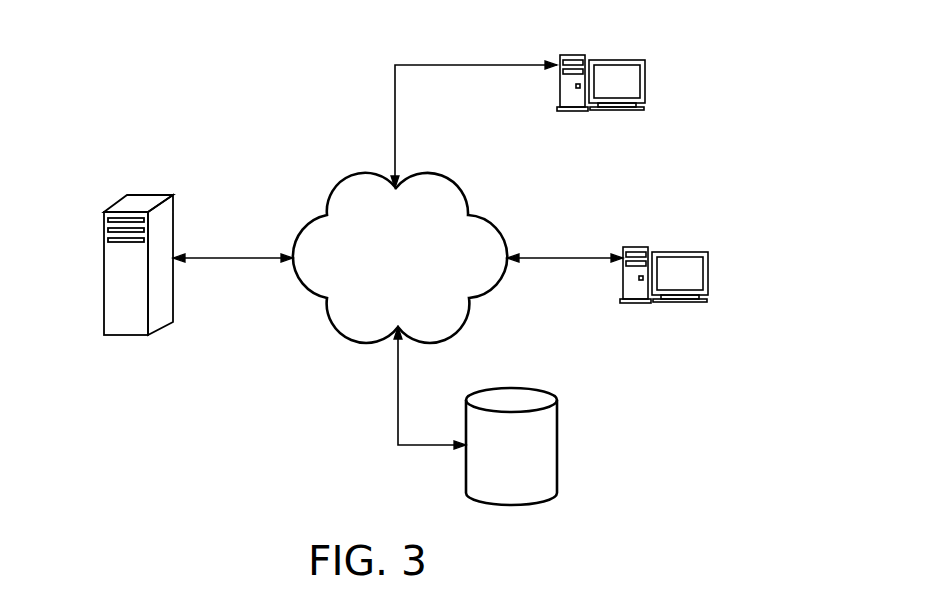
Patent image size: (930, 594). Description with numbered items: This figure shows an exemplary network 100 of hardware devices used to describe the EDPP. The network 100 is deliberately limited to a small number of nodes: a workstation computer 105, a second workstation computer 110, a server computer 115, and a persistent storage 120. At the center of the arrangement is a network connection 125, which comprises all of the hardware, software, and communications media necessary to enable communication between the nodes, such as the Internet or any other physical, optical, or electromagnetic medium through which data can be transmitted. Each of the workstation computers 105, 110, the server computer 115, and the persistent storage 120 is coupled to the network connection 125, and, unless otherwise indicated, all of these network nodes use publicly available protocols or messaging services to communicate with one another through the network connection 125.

The network 100 is at (216, 109).
The workstation computer 105 is at (620, 58).
The workstation computer 110 is at (683, 250).
The server computer 115 is at (104, 233).
The persistent storage 120 is at (557, 440).
The network connection 125 is at (417, 274).